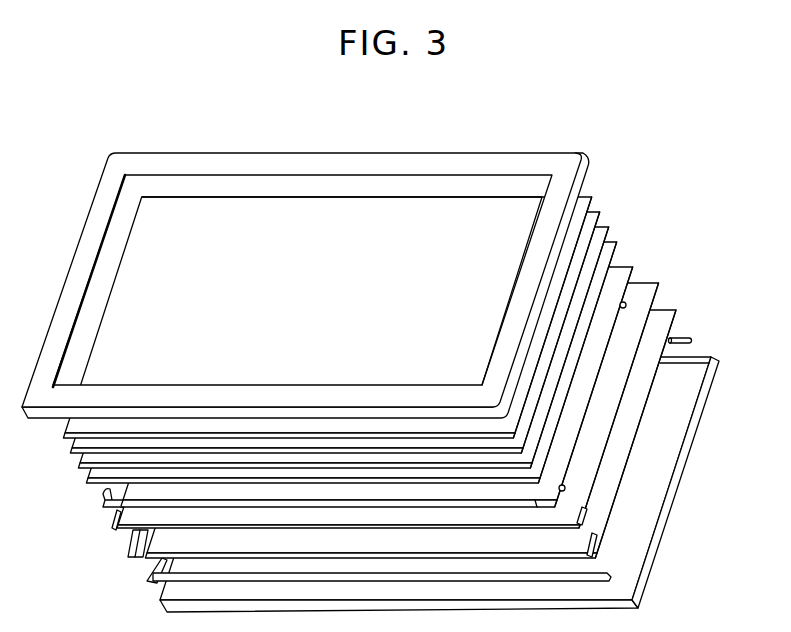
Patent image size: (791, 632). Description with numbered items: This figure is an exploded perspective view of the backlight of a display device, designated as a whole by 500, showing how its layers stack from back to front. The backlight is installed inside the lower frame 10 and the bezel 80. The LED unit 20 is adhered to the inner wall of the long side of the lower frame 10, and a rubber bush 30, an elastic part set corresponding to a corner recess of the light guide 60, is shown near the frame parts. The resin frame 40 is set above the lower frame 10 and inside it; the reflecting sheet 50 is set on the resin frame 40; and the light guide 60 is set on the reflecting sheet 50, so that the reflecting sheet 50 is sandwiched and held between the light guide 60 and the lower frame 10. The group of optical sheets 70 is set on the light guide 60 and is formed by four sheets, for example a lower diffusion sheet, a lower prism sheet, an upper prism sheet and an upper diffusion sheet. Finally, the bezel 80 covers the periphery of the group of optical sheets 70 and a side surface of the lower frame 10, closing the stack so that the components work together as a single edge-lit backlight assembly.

The display device 500 is at (426, 126).
The lower frame 10 is at (685, 450).
The LED unit 20 is at (610, 578).
The rubber bush 30 is at (683, 338).
The resin frame 40 is at (672, 317).
The reflecting sheet 50 is at (657, 287).
The light guide 60 is at (615, 264).
The group of optical sheets 70 is at (593, 188).
The bezel 80 is at (588, 157).